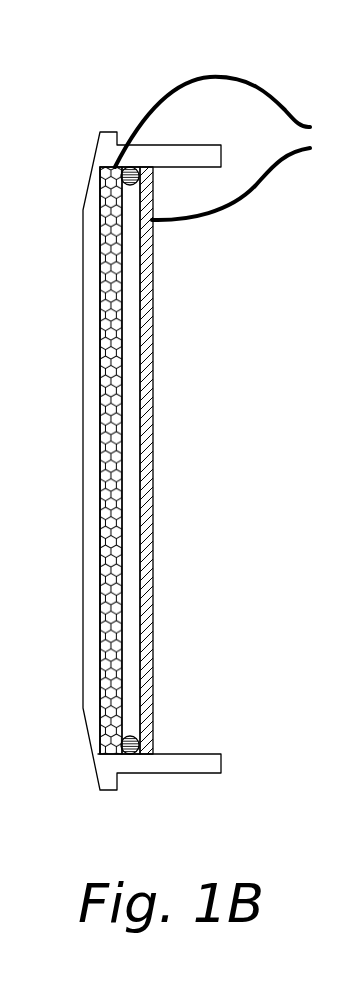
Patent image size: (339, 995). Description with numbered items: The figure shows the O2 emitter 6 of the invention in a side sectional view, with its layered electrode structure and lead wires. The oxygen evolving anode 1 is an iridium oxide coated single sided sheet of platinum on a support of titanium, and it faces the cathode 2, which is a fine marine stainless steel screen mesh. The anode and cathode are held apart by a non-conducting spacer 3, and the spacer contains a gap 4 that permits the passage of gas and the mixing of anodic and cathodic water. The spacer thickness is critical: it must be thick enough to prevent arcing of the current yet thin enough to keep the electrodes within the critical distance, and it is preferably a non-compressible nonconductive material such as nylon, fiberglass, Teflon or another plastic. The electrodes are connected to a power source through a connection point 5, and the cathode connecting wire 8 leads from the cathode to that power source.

The oxygen evolving anode 1 is at (152, 310).
The cathode 2 is at (103, 310).
The non-conducting spacer 3 is at (140, 738).
The gap 4 is at (132, 458).
The connection point 5 is at (253, 193).
The O2 emitter 6 is at (87, 235).
The cathode connecting wire 8 is at (240, 72).